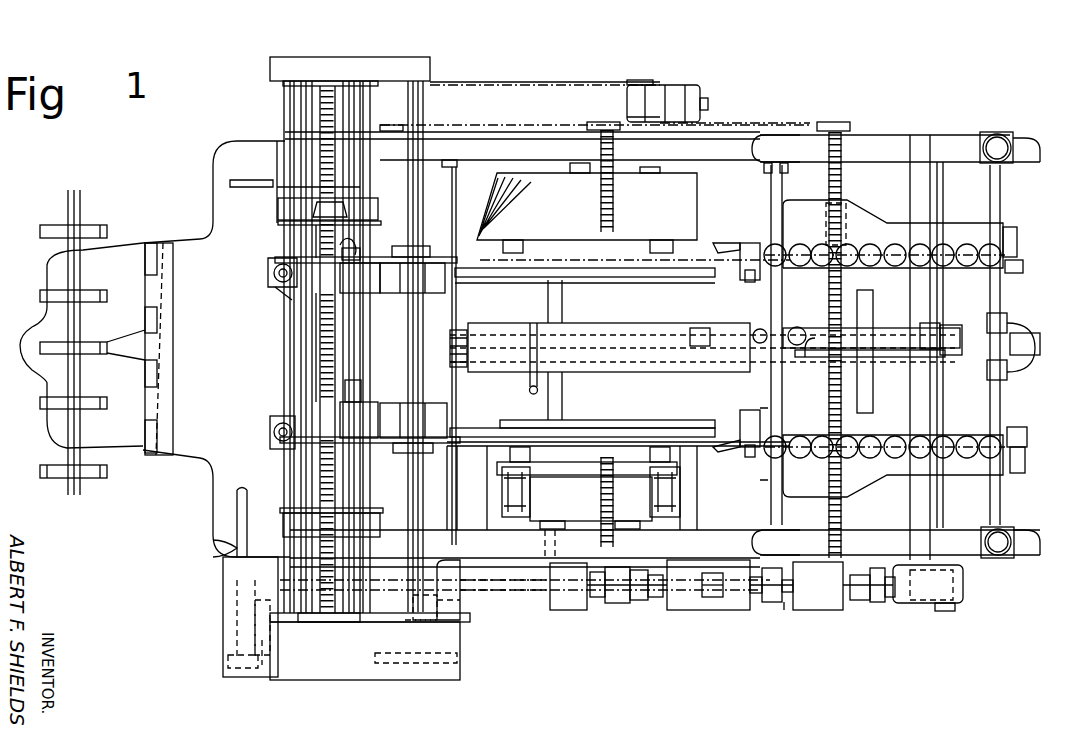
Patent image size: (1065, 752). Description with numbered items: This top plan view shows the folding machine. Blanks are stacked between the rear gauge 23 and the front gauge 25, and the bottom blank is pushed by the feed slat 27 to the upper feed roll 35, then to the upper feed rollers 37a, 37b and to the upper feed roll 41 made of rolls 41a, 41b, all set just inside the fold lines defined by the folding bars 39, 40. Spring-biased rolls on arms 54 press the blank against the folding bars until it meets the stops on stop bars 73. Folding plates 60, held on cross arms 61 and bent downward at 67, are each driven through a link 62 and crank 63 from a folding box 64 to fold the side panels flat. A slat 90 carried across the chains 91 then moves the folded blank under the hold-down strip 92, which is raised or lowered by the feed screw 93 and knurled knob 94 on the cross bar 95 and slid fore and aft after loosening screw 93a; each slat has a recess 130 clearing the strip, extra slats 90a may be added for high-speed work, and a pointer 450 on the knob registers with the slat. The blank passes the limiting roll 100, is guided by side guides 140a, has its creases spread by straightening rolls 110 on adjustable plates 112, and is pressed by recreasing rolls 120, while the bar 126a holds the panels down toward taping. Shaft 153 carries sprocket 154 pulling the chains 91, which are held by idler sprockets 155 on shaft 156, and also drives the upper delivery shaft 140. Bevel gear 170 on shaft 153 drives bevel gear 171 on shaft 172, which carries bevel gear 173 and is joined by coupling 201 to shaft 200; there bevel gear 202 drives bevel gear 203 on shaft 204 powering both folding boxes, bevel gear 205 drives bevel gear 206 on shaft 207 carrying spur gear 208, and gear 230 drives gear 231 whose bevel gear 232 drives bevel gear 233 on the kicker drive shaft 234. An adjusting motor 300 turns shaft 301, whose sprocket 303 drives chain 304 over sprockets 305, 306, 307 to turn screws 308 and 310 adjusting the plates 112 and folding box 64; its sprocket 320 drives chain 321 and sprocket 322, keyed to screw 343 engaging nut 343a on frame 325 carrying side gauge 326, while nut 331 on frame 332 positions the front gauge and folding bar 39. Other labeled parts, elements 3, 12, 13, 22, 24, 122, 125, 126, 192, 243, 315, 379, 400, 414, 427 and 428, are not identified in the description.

The section line 3 is at (220, 571).
The shaft 12 is at (652, 601).
The arm 13 is at (758, 414).
The frame 22 is at (243, 388).
The rear gauge 23 is at (70, 225).
The flange 24 is at (100, 478).
The front gauge 25 is at (275, 270).
The feed slat 27 is at (150, 243).
The upper feed roll 35 is at (311, 339).
The feed roller 37a is at (305, 331).
The feed roller 37b is at (303, 380).
The folding bar 39 is at (513, 264).
The folding bar 40 is at (520, 435).
The upper feed roll 41 is at (367, 346).
The feed roll 41a is at (423, 270).
The feed roll 41b is at (426, 413).
The arm 54 is at (527, 177).
The folding plate 60 is at (672, 242).
The cross arm 61 is at (566, 465).
The link 62 is at (498, 490).
The crank 63 is at (531, 517).
The folding box 64 is at (591, 503).
The downward bend 67 is at (491, 203).
The stop bar 73 is at (648, 279).
The slat 90 is at (870, 292).
The extra slat 90a is at (584, 340).
The chain 91 is at (662, 334).
The hold-down strip 92 is at (694, 351).
The feed screw 93 is at (792, 328).
The screw 93a is at (753, 329).
The knurled knob 94 is at (802, 326).
The cross bar 95 is at (776, 311).
The limiting roll 100 is at (746, 283).
The straightening roll 110 is at (826, 219).
The adjustable plate 112 is at (869, 233).
The recreasing roll 120 is at (1023, 272).
The bracket 122 is at (1033, 356).
The arm 125 is at (833, 333).
The block 126 is at (940, 288).
The bar 126a is at (935, 304).
The recess 130 is at (865, 353).
The upper delivery shaft 140 is at (1004, 297).
The side guide 140a is at (718, 243).
The shaft 153 is at (941, 511).
The sprocket 154 is at (946, 384).
The idler sprocket 155 is at (455, 333).
The shaft 156 is at (453, 183).
The bevel gear 170 is at (941, 577).
The bevel gear 171 is at (928, 601).
The shaft 172 is at (888, 609).
The bevel gear 173 is at (680, 611).
The arm 192 is at (125, 356).
The shaft 200 is at (606, 597).
The coupling 201 is at (626, 601).
The bevel gear 202 is at (560, 662).
The bevel gear 203 is at (568, 590).
The shaft 204 is at (556, 545).
The bevel gear 205 is at (465, 622).
The bevel gear 206 is at (441, 618).
The shaft 207 is at (413, 665).
The spur gear 208 is at (843, 511).
The gear 230 is at (290, 593).
The gear 231 is at (263, 662).
The bevel gear 232 is at (256, 632).
The bevel gear 233 is at (233, 665).
The kicker drive shaft 234 is at (266, 480).
The nut 243 is at (326, 128).
The motor 300 is at (690, 88).
The shaft 301 is at (626, 118).
The sprocket 303 is at (692, 129).
The chain 304 is at (788, 123).
The sprocket 305 is at (832, 122).
The sprocket 306 is at (386, 125).
The sprocket 307 is at (590, 123).
The screw 308 is at (840, 165).
The screw 310 is at (618, 169).
The block 315 is at (375, 402).
The sprocket 320 is at (632, 80).
The chain 321 is at (494, 80).
The sprocket 322 is at (328, 82).
The frame 325 is at (280, 214).
The side gauge 326 is at (273, 206).
The nut 331 is at (283, 294).
The frame 332 is at (275, 289).
The screw 343 is at (347, 618).
The nut 343a is at (318, 205).
The block 379 is at (378, 292).
The gear box 400 is at (836, 610).
The gear 414 is at (719, 612).
The shaft 427 is at (787, 609).
The coupling 428 is at (787, 604).
The pointer 450 is at (805, 358).